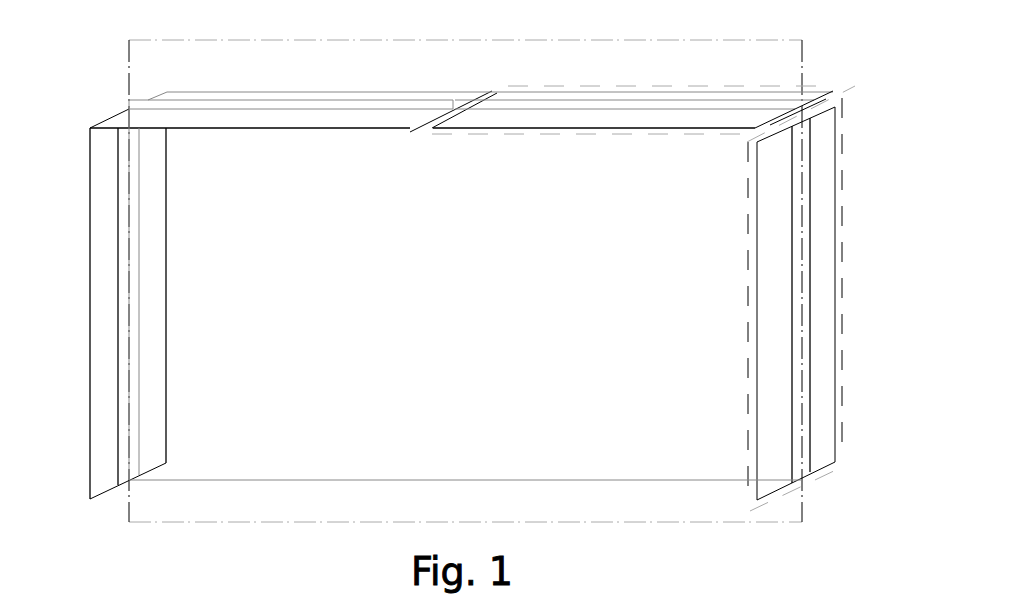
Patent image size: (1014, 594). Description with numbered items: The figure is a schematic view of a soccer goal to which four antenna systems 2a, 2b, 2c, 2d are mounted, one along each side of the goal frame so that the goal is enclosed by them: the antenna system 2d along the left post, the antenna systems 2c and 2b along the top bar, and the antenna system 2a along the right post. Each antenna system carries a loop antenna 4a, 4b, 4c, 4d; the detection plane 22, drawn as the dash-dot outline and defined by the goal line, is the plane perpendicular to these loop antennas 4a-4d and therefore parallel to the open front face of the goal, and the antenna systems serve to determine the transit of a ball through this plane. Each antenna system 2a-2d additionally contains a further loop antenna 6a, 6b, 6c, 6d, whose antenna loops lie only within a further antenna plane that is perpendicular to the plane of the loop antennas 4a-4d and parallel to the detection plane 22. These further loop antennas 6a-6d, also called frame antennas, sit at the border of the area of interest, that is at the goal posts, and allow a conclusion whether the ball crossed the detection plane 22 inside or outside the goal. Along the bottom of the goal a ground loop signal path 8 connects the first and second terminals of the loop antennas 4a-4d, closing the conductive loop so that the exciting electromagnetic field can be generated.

The detection plane 22 is at (168, 70).
The antenna system 2a is at (842, 332).
The antenna system 2b is at (827, 87).
The antenna system 2c is at (313, 57).
The antenna system 2d is at (82, 318).
The loop antenna 4a is at (835, 238).
The loop antenna 4b is at (722, 128).
The loop antenna 4c is at (375, 128).
The loop antenna 4d is at (166, 347).
The further loop antenna 6a is at (812, 460).
The further loop antenna 6b is at (660, 100).
The further loop antenna 6c is at (297, 100).
The further loop antenna 6d is at (118, 392).
The ground loop signal path 8 is at (468, 480).